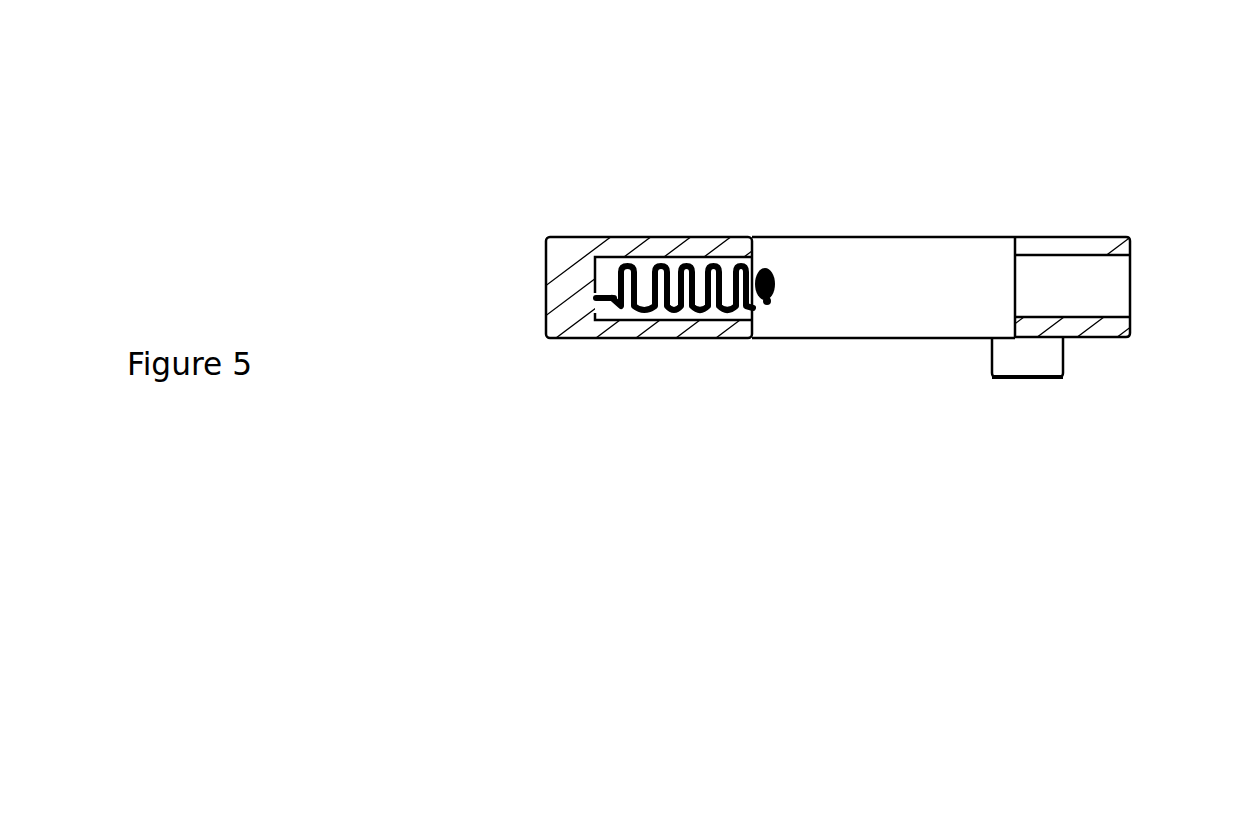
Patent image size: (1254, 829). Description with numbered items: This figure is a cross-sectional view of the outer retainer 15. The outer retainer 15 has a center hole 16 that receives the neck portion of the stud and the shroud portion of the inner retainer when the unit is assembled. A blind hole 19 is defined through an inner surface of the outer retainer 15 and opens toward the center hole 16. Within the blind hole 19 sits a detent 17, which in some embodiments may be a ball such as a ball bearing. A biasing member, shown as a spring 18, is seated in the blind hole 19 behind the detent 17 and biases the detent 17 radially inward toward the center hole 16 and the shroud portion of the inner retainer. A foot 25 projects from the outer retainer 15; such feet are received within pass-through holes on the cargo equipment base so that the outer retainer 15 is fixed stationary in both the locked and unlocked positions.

The outer retainer 15 is at (573, 257).
The center hole 16 is at (855, 277).
The detent 17 is at (772, 297).
The spring 18 is at (628, 310).
The blind hole 19 is at (673, 270).
The feet 25 is at (1030, 357).